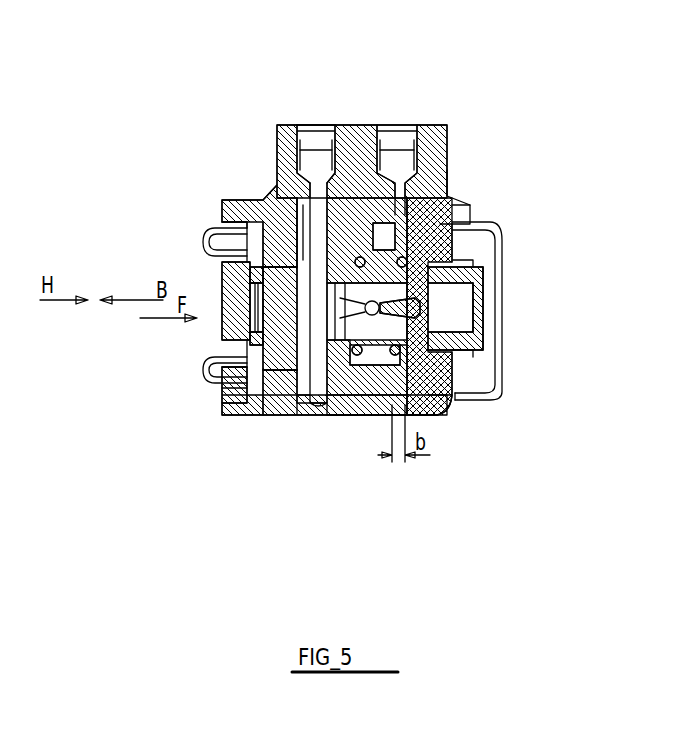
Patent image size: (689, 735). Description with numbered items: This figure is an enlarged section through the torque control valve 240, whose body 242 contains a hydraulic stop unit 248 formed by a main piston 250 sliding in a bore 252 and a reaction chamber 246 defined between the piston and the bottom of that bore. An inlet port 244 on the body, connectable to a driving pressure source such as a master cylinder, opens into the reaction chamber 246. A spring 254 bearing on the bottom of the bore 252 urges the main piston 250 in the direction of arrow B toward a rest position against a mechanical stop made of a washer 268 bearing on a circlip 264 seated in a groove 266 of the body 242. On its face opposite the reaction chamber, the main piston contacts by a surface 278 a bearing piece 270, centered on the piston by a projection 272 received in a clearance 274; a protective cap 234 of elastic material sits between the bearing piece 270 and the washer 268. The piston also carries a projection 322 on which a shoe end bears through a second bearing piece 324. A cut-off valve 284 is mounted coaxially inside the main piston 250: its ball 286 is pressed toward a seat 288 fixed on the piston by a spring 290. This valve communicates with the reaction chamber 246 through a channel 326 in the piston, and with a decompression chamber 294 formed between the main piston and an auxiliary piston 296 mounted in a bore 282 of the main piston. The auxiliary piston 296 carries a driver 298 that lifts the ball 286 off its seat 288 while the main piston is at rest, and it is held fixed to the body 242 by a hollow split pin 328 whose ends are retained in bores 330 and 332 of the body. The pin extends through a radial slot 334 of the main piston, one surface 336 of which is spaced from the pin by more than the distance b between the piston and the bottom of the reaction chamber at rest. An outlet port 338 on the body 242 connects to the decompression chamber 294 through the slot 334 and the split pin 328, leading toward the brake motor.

The outlet port 338 is at (312, 127).
The bore 332 is at (347, 150).
The inlet port 244 is at (400, 150).
The hollow split pin 328 is at (300, 200).
The driver 298 is at (292, 235).
The reaction chamber 246 is at (450, 185).
The hydraulic stop unit 248 is at (455, 205).
The cut-off valve 284 is at (448, 224).
The seat 288 is at (470, 225).
The protective cap 234 is at (215, 230).
The radial slot 334 is at (240, 225).
The clearance 274 is at (248, 262).
The projection 272 is at (245, 282).
The bearing piece 270 is at (228, 330).
The surface 278 is at (250, 345).
The circlip 264 is at (230, 390).
The groove 266 is at (240, 395).
The washer 268 is at (248, 402).
The auxiliary piston 296 is at (270, 400).
The surface 336 is at (285, 383).
The bore 330 is at (300, 413).
The bore 282 is at (333, 417).
The body 242 is at (340, 417).
The torque control valve 240 is at (359, 419).
The decompression chamber 294 is at (375, 330).
The bore 252 is at (385, 375).
The main piston 250 is at (433, 400).
The spring 254 is at (440, 408).
The ball 286 is at (468, 400).
The second bearing piece 324 is at (482, 260).
The projection 322 is at (476, 295).
The spring 290 is at (450, 300).
The channel 326 is at (478, 333).